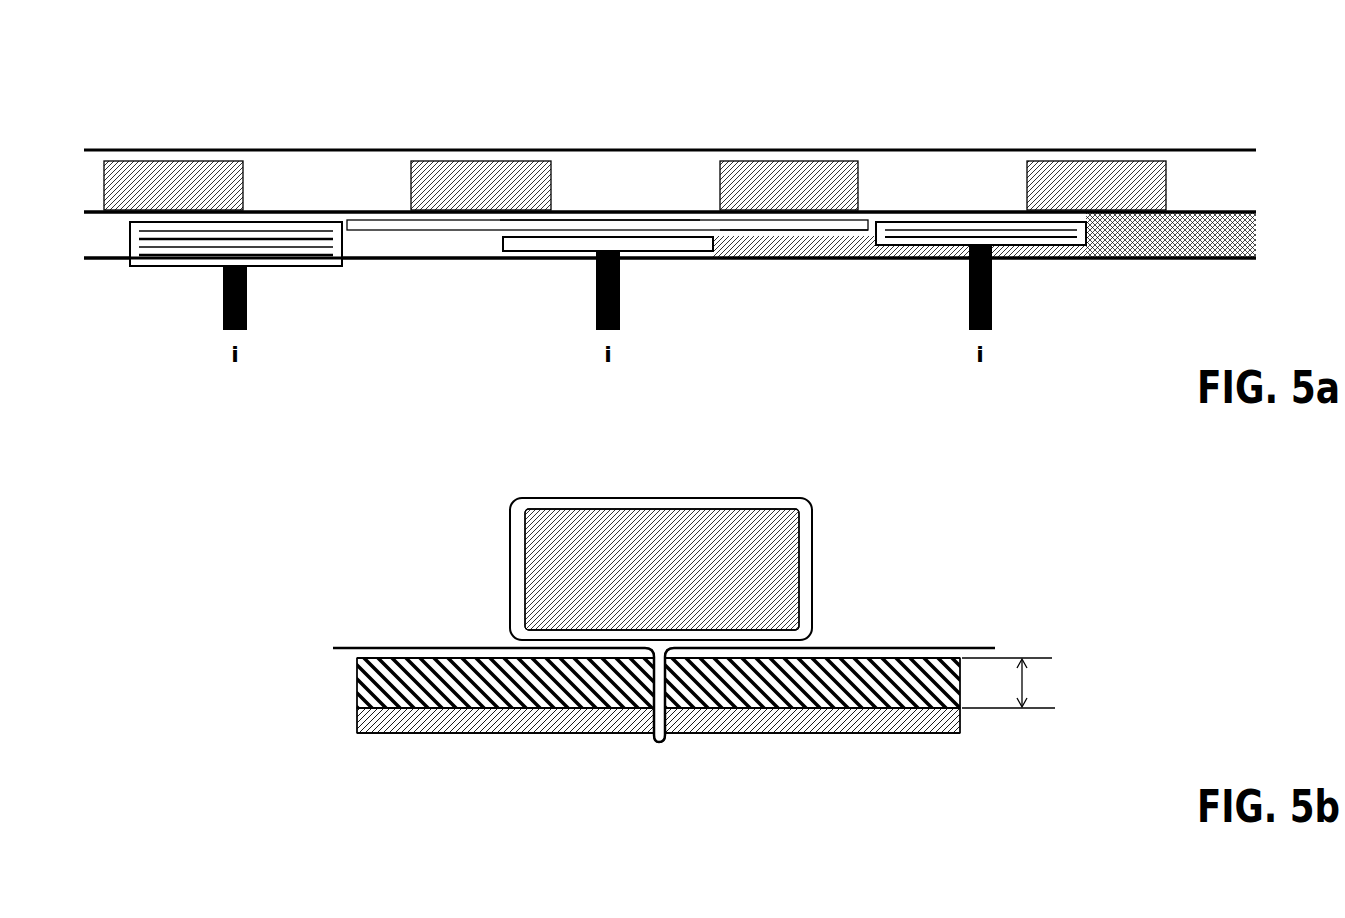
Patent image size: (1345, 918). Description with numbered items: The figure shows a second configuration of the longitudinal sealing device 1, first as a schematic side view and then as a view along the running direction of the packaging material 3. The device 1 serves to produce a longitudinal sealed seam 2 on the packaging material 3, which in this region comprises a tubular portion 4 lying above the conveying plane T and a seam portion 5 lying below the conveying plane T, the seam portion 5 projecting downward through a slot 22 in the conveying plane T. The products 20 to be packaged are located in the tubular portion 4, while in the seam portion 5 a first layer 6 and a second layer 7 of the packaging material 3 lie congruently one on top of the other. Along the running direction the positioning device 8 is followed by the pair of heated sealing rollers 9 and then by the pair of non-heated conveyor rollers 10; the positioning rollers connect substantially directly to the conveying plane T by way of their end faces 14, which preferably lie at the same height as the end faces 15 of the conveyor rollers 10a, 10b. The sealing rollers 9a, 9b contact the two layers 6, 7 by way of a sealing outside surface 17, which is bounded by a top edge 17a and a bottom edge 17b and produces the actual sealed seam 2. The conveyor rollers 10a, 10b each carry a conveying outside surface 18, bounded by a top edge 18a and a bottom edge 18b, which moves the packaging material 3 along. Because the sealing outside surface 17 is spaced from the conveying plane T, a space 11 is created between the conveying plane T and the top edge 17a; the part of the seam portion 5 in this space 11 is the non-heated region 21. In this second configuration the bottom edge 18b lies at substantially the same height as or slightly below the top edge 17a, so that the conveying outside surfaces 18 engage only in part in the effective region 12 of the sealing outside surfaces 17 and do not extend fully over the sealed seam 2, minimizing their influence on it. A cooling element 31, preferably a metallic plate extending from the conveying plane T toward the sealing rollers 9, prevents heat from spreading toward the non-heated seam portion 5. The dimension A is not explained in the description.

In FIG. 5a, the longitudinal sealing device 1 is at (339, 300).
In FIG. 5a, the longitudinal sealed seam 2 is at (773, 243).
In FIG. 5b, the longitudinal sealed seam 2 is at (660, 707).
In FIG. 5a, the packaging material 3 is at (372, 150).
In FIG. 5b, the packaging material 3 is at (765, 500).
In FIG. 5a, the tubular portion 4 is at (702, 173).
In FIG. 5b, the tubular portion 4 is at (675, 500).
In FIG. 5a, the seam portion 5 is at (437, 242).
In FIG. 5b, the seam portion 5 is at (675, 702).
In FIG. 5b, the first layer 6 is at (641, 794).
In FIG. 5b, the second layer 7 is at (658, 740).
In FIG. 5a, the positioning device 8 is at (165, 267).
In FIG. 5a, the pair of heated sealing rollers 9 is at (547, 252).
In FIG. 5b, the sealing roller 9a is at (357, 727).
In FIG. 5a, the sealing roller 9b is at (587, 246).
In FIG. 5b, the sealing roller 9b is at (922, 728).
In FIG. 5a, the pair of non-heated conveyor rollers 10 is at (897, 250).
In FIG. 5b, the conveyor roller 10a is at (543, 687).
In FIG. 5a, the conveyor roller 10b is at (930, 232).
In FIG. 5b, the conveyor roller 10b is at (817, 700).
In FIG. 5a, the space 11 is at (594, 230).
In FIG. 5b, the space 11 is at (382, 678).
In FIG. 5a, the effective region 12 is at (675, 246).
In FIG. 5b, the effective region 12 is at (357, 720).
In FIG. 5a, the end face 14 is at (229, 222).
In FIG. 5a, the end face 15 is at (952, 215).
In FIG. 5a, the sealing outside surface 17 is at (513, 246).
In FIG. 5b, the sealing outside surface 17 is at (380, 715).
In FIG. 5a, the top edge 17a is at (553, 237).
In FIG. 5b, the top edge 17a is at (428, 708).
In FIG. 5a, the bottom edge 17b is at (693, 251).
In FIG. 5b, the bottom edge 17b is at (413, 733).
In FIG. 5a, the conveying outside surface 18 is at (1022, 232).
In FIG. 5b, the conveying outside surface 18 is at (572, 687).
In FIG. 5a, the top edge 18a is at (982, 220).
In FIG. 5b, the top edge 18a is at (455, 660).
In FIG. 5a, the bottom edge 18b is at (1067, 246).
In FIG. 5b, the bottom edge 18b is at (447, 715).
In FIG. 5a, the product 20 is at (151, 192).
In FIG. 5b, the product 20 is at (773, 568).
In FIG. 5a, the non-heated region 21 is at (1203, 228).
In FIG. 5b, the slot 22 is at (673, 645).
In FIG. 5a, the cooling element 31 is at (838, 227).
In FIG. 5a, the conveying plane T is at (288, 212).
In FIG. 5b, the conveying plane T is at (930, 648).
In FIG. 5b, the thickness A is at (1023, 683).